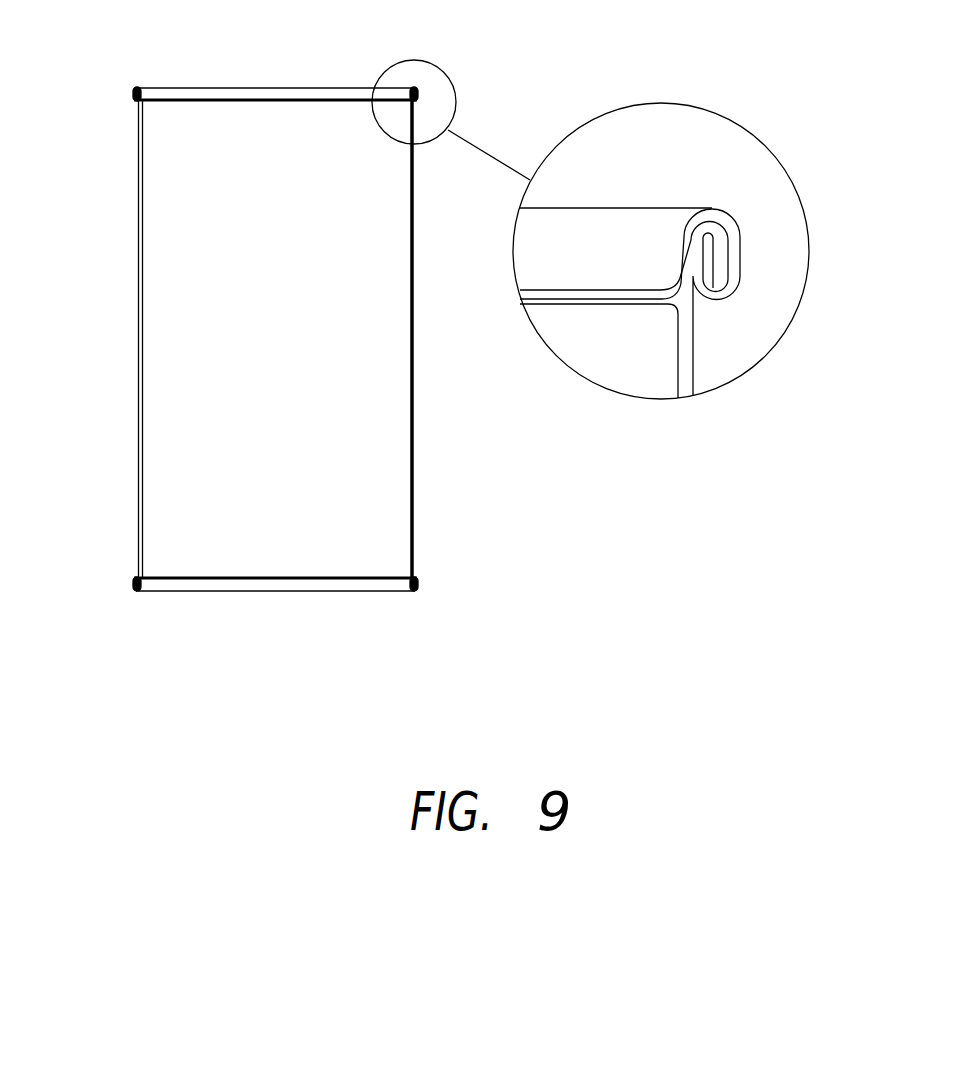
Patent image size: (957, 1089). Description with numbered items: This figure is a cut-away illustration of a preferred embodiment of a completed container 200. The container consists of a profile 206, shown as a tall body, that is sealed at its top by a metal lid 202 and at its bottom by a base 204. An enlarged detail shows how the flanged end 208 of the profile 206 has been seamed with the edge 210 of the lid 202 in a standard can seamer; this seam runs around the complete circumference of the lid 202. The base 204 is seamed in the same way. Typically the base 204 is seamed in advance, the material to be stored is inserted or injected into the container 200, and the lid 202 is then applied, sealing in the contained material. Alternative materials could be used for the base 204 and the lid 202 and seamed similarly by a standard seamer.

The container 200 is at (233, 337).
The lid 202 is at (231, 87).
The base 204 is at (257, 592).
The profile 206 is at (139, 335).
The flanged end 208 is at (712, 233).
The edge 210 is at (740, 240).